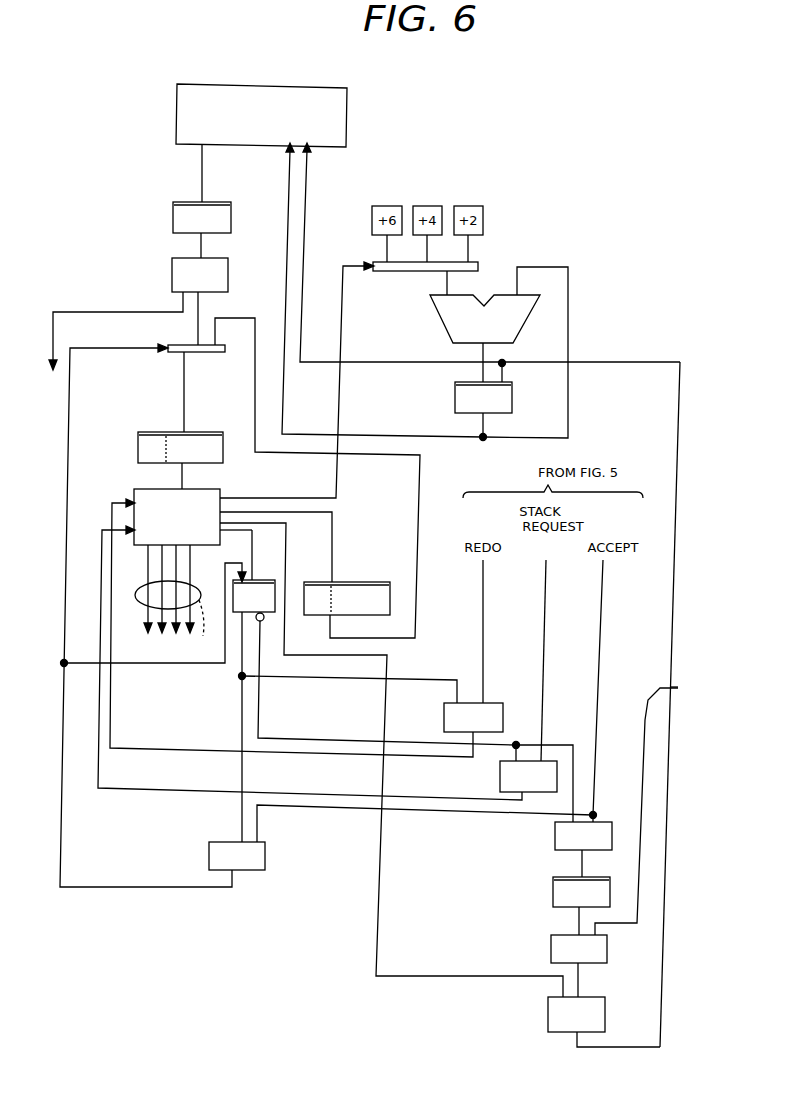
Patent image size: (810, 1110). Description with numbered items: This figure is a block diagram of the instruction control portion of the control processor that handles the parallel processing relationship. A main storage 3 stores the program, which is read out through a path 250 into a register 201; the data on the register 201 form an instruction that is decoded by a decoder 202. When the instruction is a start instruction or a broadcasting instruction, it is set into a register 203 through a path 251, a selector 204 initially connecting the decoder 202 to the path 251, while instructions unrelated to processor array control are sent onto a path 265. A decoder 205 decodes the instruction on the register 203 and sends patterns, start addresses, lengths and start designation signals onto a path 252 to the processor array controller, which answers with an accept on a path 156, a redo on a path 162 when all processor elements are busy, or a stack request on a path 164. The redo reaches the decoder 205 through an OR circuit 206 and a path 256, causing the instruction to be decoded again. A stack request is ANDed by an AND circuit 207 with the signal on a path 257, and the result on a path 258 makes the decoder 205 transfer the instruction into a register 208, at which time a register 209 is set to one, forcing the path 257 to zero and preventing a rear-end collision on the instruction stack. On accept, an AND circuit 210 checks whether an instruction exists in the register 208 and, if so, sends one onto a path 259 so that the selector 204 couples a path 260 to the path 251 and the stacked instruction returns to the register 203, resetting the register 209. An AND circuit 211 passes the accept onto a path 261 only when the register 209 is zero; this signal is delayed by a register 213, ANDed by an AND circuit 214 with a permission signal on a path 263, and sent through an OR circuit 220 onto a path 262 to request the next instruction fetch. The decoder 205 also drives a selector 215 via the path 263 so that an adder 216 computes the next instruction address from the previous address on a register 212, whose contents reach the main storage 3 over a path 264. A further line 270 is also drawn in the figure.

The main storage 3 is at (347, 110).
The accept signal path 156 is at (605, 601).
The redo path 162 is at (486, 600).
The stack request path 164 is at (548, 600).
The register 201 is at (231, 208).
The decoder 202 is at (228, 266).
The register 203 is at (200, 432).
The selector 204 is at (176, 344).
The decoder 205 is at (222, 490).
The OR circuit 206 is at (495, 702).
The AND circuit 207 is at (500, 781).
The register 208 is at (372, 582).
The register 209 is at (271, 578).
The AND circuit 210 is at (265, 852).
The AND circuit 211 is at (555, 834).
The register 212 is at (512, 388).
The register 213 is at (553, 890).
The AND circuit 214 is at (551, 946).
The selector 215 is at (480, 266).
The adder 216 is at (528, 320).
The OR circuit 220 is at (605, 1008).
The path 250 is at (205, 178).
The path 251 is at (187, 400).
The path 252 is at (178, 604).
The path 256 is at (150, 746).
The path 257 is at (305, 737).
The path 258 is at (305, 794).
The path 259 is at (122, 879).
The path 260 is at (417, 508).
The path 261 is at (579, 867).
The path 262 is at (680, 602).
The path 263 is at (343, 328).
The path 264 is at (373, 432).
The path 265 is at (68, 312).
The signal line 270 is at (416, 974).